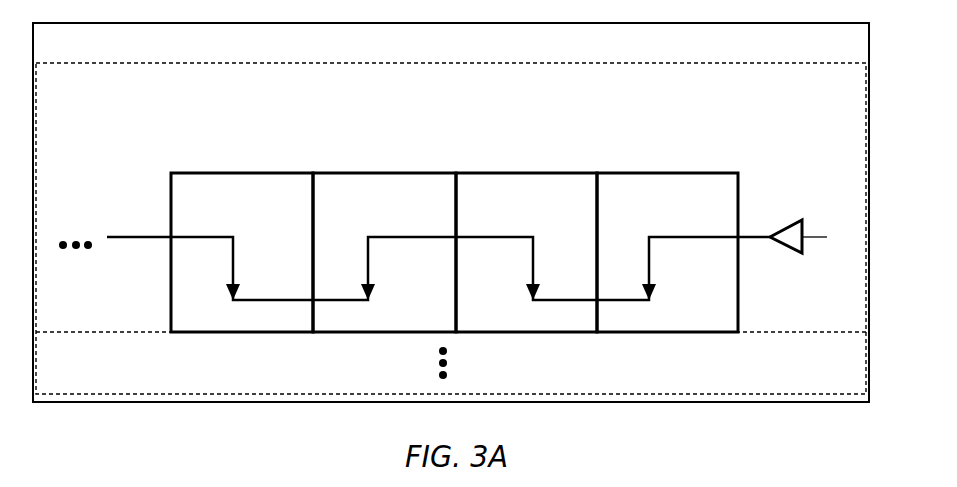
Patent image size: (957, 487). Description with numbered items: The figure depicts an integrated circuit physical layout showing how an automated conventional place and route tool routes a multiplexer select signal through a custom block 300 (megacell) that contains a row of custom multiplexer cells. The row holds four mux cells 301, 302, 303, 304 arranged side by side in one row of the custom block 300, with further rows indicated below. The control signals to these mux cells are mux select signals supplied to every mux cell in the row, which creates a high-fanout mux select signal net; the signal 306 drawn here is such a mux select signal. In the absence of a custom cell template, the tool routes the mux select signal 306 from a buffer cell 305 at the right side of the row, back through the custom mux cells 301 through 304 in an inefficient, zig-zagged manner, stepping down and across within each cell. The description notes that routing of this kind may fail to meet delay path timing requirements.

The custom block (megacell) 300 is at (265, 53).
The mux cell 301 is at (278, 203).
The mux cell 302 is at (420, 203).
The mux cell 303 is at (562, 203).
The mux cell 304 is at (705, 203).
The buffer cell 305 is at (812, 253).
The mux select signal 306 is at (467, 224).